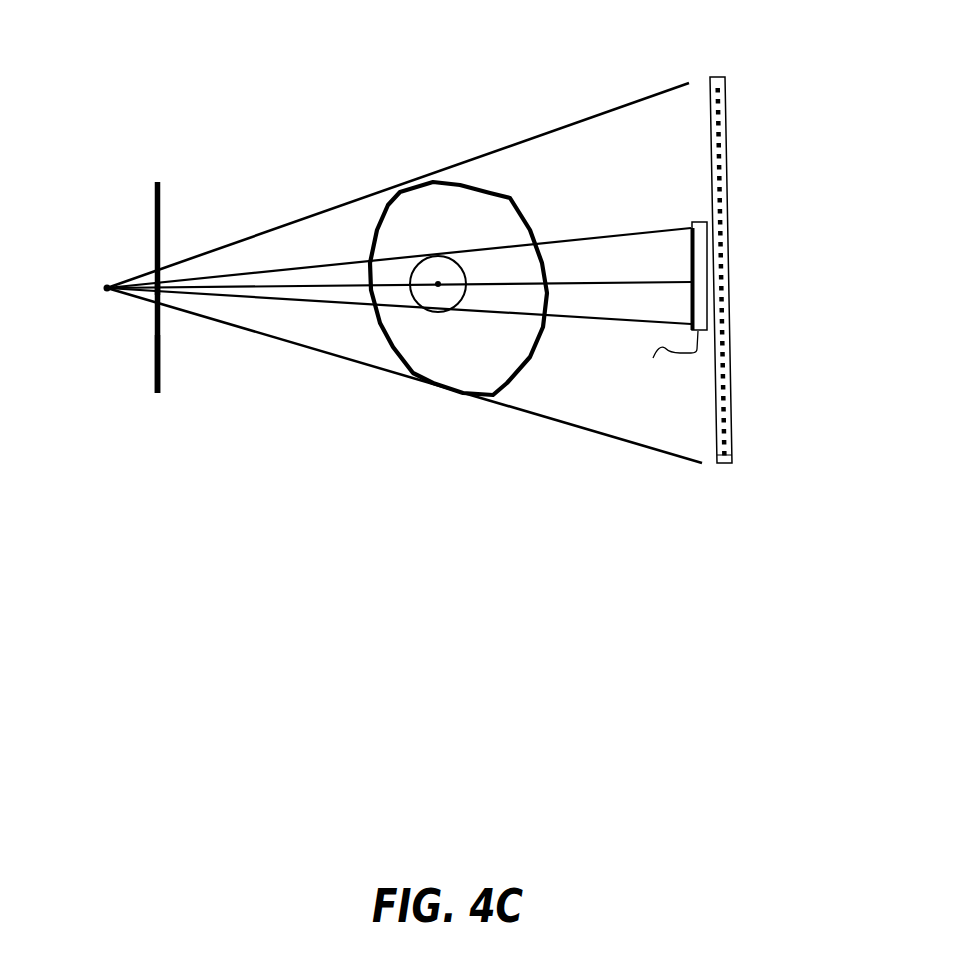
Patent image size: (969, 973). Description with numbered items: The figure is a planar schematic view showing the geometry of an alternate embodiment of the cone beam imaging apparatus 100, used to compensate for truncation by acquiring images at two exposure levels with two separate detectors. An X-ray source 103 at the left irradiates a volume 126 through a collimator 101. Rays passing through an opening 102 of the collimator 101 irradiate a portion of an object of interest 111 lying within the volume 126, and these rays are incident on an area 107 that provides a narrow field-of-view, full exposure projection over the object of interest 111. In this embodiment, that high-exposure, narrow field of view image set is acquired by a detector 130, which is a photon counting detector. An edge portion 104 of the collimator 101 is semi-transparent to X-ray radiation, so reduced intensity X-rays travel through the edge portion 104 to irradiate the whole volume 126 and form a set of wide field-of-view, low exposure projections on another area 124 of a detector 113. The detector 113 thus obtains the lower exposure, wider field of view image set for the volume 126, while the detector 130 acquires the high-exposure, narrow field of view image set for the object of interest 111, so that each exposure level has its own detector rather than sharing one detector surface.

The cone beam imaging apparatus 100 is at (162, 79).
The collimator 101 is at (157, 213).
The opening 102 is at (152, 292).
The X-ray source 103 is at (98, 278).
The edge portion 104 is at (155, 343).
The area 107 is at (690, 250).
The object of interest 111 is at (436, 302).
The detector 113 is at (730, 462).
The area 124 is at (728, 96).
The volume 126 is at (420, 353).
The detector 130 is at (657, 358).